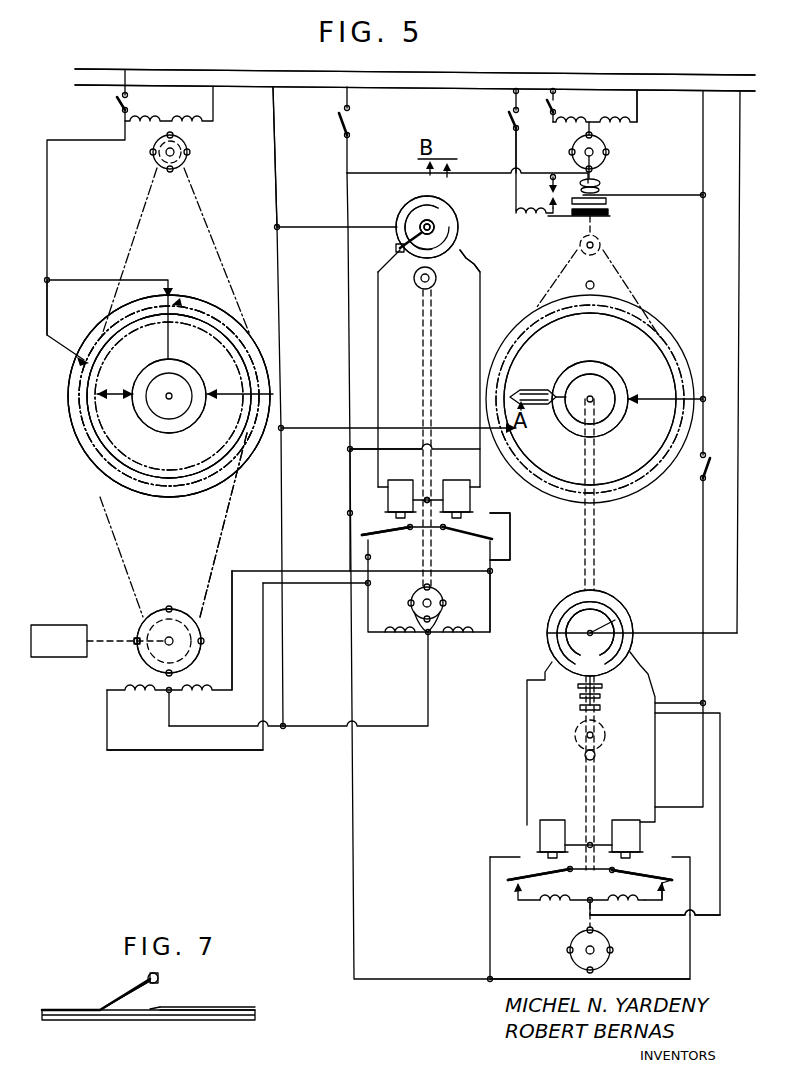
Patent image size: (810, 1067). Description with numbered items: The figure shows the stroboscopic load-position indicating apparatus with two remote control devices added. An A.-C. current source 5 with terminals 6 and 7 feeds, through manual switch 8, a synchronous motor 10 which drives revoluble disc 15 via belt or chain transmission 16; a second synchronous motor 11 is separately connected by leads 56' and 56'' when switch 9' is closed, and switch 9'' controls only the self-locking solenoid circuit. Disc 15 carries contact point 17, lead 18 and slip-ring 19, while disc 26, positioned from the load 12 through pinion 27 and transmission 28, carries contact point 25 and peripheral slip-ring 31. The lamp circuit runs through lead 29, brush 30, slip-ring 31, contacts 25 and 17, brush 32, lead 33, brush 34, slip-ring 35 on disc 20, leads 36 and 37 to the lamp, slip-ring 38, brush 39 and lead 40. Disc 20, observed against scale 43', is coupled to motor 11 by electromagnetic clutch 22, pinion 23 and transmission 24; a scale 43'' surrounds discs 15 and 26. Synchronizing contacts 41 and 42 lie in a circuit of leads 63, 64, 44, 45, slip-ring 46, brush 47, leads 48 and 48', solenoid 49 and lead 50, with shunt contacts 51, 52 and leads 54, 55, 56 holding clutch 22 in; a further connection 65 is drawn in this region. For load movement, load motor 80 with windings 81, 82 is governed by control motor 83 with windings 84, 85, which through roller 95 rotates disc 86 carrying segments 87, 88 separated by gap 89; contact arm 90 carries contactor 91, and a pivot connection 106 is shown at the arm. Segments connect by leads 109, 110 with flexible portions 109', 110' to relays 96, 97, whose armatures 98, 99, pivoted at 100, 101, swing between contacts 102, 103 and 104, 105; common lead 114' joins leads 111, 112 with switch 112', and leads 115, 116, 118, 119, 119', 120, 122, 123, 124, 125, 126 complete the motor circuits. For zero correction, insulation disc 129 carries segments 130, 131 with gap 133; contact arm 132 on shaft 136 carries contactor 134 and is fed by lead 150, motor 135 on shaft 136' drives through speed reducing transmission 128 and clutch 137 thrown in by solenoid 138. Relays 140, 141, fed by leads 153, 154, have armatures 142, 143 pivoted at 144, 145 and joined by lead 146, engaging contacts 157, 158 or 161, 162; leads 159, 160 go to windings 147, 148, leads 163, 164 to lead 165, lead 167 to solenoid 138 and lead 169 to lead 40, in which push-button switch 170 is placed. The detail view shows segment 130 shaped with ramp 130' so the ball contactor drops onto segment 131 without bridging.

In FIG. 5, the A.-C. current source 5 is at (70, 72).
In FIG. 5, the terminal 6 is at (420, 72).
In FIG. 5, the terminal 7 is at (428, 89).
In FIG. 5, the manual switch 8 is at (115, 106).
In FIG. 5, the switch 9' is at (593, 113).
In FIG. 5, the switch 9'' is at (493, 150).
In FIG. 5, the self-starting synchronous motor 10 is at (186, 144).
In FIG. 5, the self-starting synchronous motor 11 is at (607, 152).
In FIG. 5, the load 12 is at (47, 625).
In FIG. 5, the revoluble disc 15 is at (120, 462).
In FIG. 5, the belt or chain transmission 16 is at (135, 240).
In FIG. 5, the contact point 17 is at (100, 422).
In FIG. 5, the lead 18 is at (110, 450).
In FIG. 5, the slip-ring 19 is at (153, 460).
In FIG. 5, the disc 20 is at (710, 376).
In FIG. 5, the electromagnetic clutch 22 is at (610, 203).
In FIG. 5, the pinion 23 is at (601, 241).
In FIG. 5, the belt or chain transmission 24 is at (640, 312).
In FIG. 5, the contact point 25 is at (90, 418).
In FIG. 5, the revoluble disc 26 is at (262, 372).
In FIG. 5, the pinion 27 is at (178, 612).
In FIG. 5, the belt or chain transmission 28 is at (230, 512).
In FIG. 5, the lead 29 is at (47, 300).
In FIG. 5, the brush 30 is at (80, 364).
In FIG. 5, the peripheral slip-ring 31 is at (185, 473).
In FIG. 5, the brush 32 is at (176, 470).
In FIG. 5, the lead 33 is at (315, 430).
In FIG. 5, the brush 34 is at (557, 421).
In FIG. 5, the slip-ring 35 is at (574, 370).
In FIG. 5, the lead 36 is at (548, 423).
In FIG. 5, the lead 37 is at (540, 390).
In FIG. 5, the slip-ring 38 is at (632, 405).
In FIG. 5, the brush 39 is at (632, 395).
In FIG. 5, the lead 40 is at (703, 137).
In FIG. 5, the fixed contact point 41 is at (172, 290).
In FIG. 5, the contact point 42 is at (178, 303).
In FIG. 5, the scale 43' is at (590, 383).
In FIG. 5, the fixed scale 43'' is at (153, 410).
In FIG. 5, the lead 44 is at (75, 280).
In FIG. 5, the lead 45 is at (214, 311).
In FIG. 5, the slip-ring 46 is at (140, 470).
In FIG. 5, the brush 47 is at (275, 398).
In FIG. 5, the lead 48 is at (248, 157).
In FIG. 5, the lead 48' is at (467, 168).
In FIG. 5, the solenoid 49 is at (598, 190).
In FIG. 5, the lead 50 is at (690, 195).
In FIG. 5, the contact point 51 is at (553, 176).
In FIG. 5, the contact point 52 is at (553, 218).
In FIG. 5, the lead 54 is at (522, 216).
In FIG. 5, the lead 55 is at (512, 140).
In FIG. 5, the lead 56 is at (499, 102).
In FIG. 5, the lead 56' is at (554, 83).
In FIG. 5, the lead 56'' is at (660, 106).
In FIG. 5, the lead 63 is at (128, 72).
In FIG. 5, the lead 64 is at (125, 124).
In FIG. 5, the conductor 65 is at (80, 143).
In FIG. 5, the load motor 80 is at (141, 659).
In FIG. 5, the reversing winding 81 is at (140, 695).
In FIG. 5, the reversing winding 82 is at (200, 697).
In FIG. 5, the control motor 83 is at (440, 636).
In FIG. 5, the reversing winding 84 is at (403, 636).
In FIG. 5, the reversing winding 85 is at (470, 637).
In FIG. 5, the disc 86 is at (398, 205).
In FIG. 5, the arcuate conducting segment 87 is at (400, 224).
In FIG. 5, the arcuate conducting segment 88 is at (458, 222).
In FIG. 5, the gap 89 is at (422, 210).
In FIG. 5, the contact arm 90 is at (418, 231).
In FIG. 5, the contactor 91 is at (423, 200).
In FIG. 5, the friction roller 95 is at (434, 283).
In FIG. 5, the relay magnet 96 is at (432, 352).
In FIG. 5, the relay magnet 97 is at (456, 480).
In FIG. 5, the armature 98 is at (398, 544).
In FIG. 5, the armature 99 is at (467, 544).
In FIG. 5, the pivot 100 is at (429, 544).
In FIG. 5, the pivot 101 is at (452, 544).
In FIG. 5, the contact point 102 is at (362, 535).
In FIG. 5, the contact point 103 is at (492, 541).
In FIG. 5, the contact 104 is at (350, 510).
In FIG. 5, the contact 105 is at (493, 524).
In FIG. 5, the shaft 106 is at (400, 243).
In FIG. 5, the lead 109 is at (398, 379).
In FIG. 5, the flexible terminal portion 109' is at (404, 290).
In FIG. 5, the lead 110 is at (493, 368).
In FIG. 5, the flexible terminal portion 110' is at (499, 262).
In FIG. 5, the lead 111 is at (433, 447).
In FIG. 5, the lead 112 is at (328, 311).
In FIG. 5, the switch 112' is at (370, 130).
In FIG. 5, the common lead 114' is at (458, 469).
In FIG. 5, the lead 115 is at (277, 145).
In FIG. 5, the lead 116 is at (315, 230).
In FIG. 5, the lead 118 is at (283, 668).
In FIG. 5, the lead 119 is at (226, 752).
In FIG. 5, the branch lead 119' is at (363, 694).
In FIG. 5, the lead 120 is at (263, 752).
In FIG. 5, the lead 122 is at (510, 571).
In FIG. 5, the lead 123 is at (377, 600).
In FIG. 5, the lead 124 is at (240, 578).
In FIG. 5, the lead 125 is at (492, 603).
In FIG. 5, the lead 126 is at (362, 533).
In FIG. 5, the speed reducing transmission 128 is at (604, 737).
In FIG. 5, the insulation disc 129 is at (548, 633).
In FIG. 7, the insulation disc 129 is at (215, 1020).
In FIG. 5, the conducting segment 130 is at (579, 657).
In FIG. 7, the conducting segment 130 is at (86, 994).
In FIG. 7, the ramp 130' is at (133, 1017).
In FIG. 5, the conducting segment 131 is at (597, 607).
In FIG. 7, the conducting segment 131 is at (235, 1010).
In FIG. 5, the contact arm 132 is at (628, 620).
In FIG. 7, the contact arm 132 is at (158, 973).
In FIG. 5, the gap 133 is at (547, 620).
In FIG. 5, the contactor 134 is at (617, 607).
In FIG. 7, the contactor 134 is at (160, 982).
In FIG. 5, the motor 135 is at (610, 950).
In FIG. 5, the shaft 136 is at (615, 494).
In FIG. 5, the shaft 136' is at (618, 773).
In FIG. 5, the clutch 137 is at (602, 687).
In FIG. 5, the solenoid 138 is at (578, 710).
In FIG. 5, the relay 140 is at (545, 818).
In FIG. 5, the relay 141 is at (624, 818).
In FIG. 5, the armature 142 is at (535, 872).
In FIG. 5, the armature 143 is at (645, 868).
In FIG. 5, the pivot 144 is at (560, 882).
In FIG. 5, the pivot 145 is at (641, 884).
In FIG. 5, the lead 146 is at (595, 857).
In FIG. 5, the reversing winding 147 is at (558, 904).
In FIG. 5, the reversing winding 148 is at (637, 905).
In FIG. 5, the lead 150 is at (737, 640).
In FIG. 5, the lead 153 is at (552, 662).
In FIG. 5, the lead 154 is at (655, 697).
In FIG. 5, the contact point 157 is at (515, 882).
In FIG. 5, the contact point 158 is at (667, 890).
In FIG. 5, the lead 159 is at (522, 900).
In FIG. 5, the lead 160 is at (693, 916).
In FIG. 5, the contact point 161 is at (522, 865).
In FIG. 5, the contact point 162 is at (657, 863).
In FIG. 5, the lead 163 is at (490, 945).
In FIG. 5, the lead 164 is at (672, 981).
In FIG. 5, the lead 165 is at (375, 980).
In FIG. 5, the lead 167 is at (720, 775).
In FIG. 5, the lead 169 is at (585, 757).
In FIG. 5, the normally open switch 170 is at (709, 475).